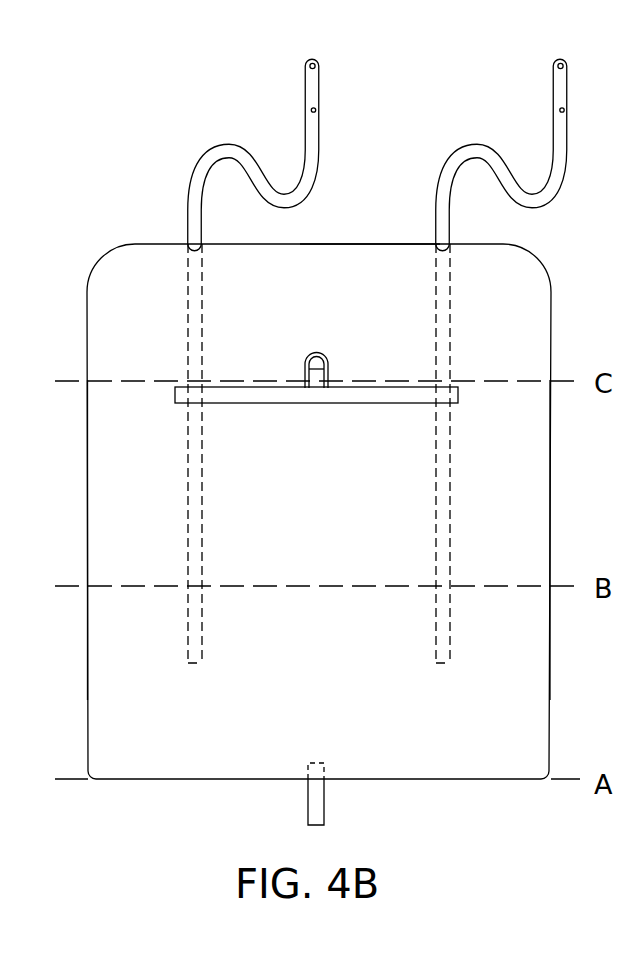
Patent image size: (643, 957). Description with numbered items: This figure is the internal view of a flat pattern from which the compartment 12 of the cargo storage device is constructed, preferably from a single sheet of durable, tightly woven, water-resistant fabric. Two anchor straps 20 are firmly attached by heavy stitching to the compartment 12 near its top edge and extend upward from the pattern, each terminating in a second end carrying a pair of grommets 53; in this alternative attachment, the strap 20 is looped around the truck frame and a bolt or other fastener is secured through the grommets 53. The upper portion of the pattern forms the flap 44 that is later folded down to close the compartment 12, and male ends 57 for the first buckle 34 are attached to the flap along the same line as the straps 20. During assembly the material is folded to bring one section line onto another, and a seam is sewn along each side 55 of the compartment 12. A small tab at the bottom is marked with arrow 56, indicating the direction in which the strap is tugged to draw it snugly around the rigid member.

The compartment 12 is at (414, 93).
The strap 20 is at (198, 171).
The grommet 53 is at (311, 108).
The flap 44 is at (366, 243).
The side 55 is at (87, 484).
The first buckle 34 is at (321, 356).
The male end 57 is at (303, 381).
The arrow 56 is at (308, 805).